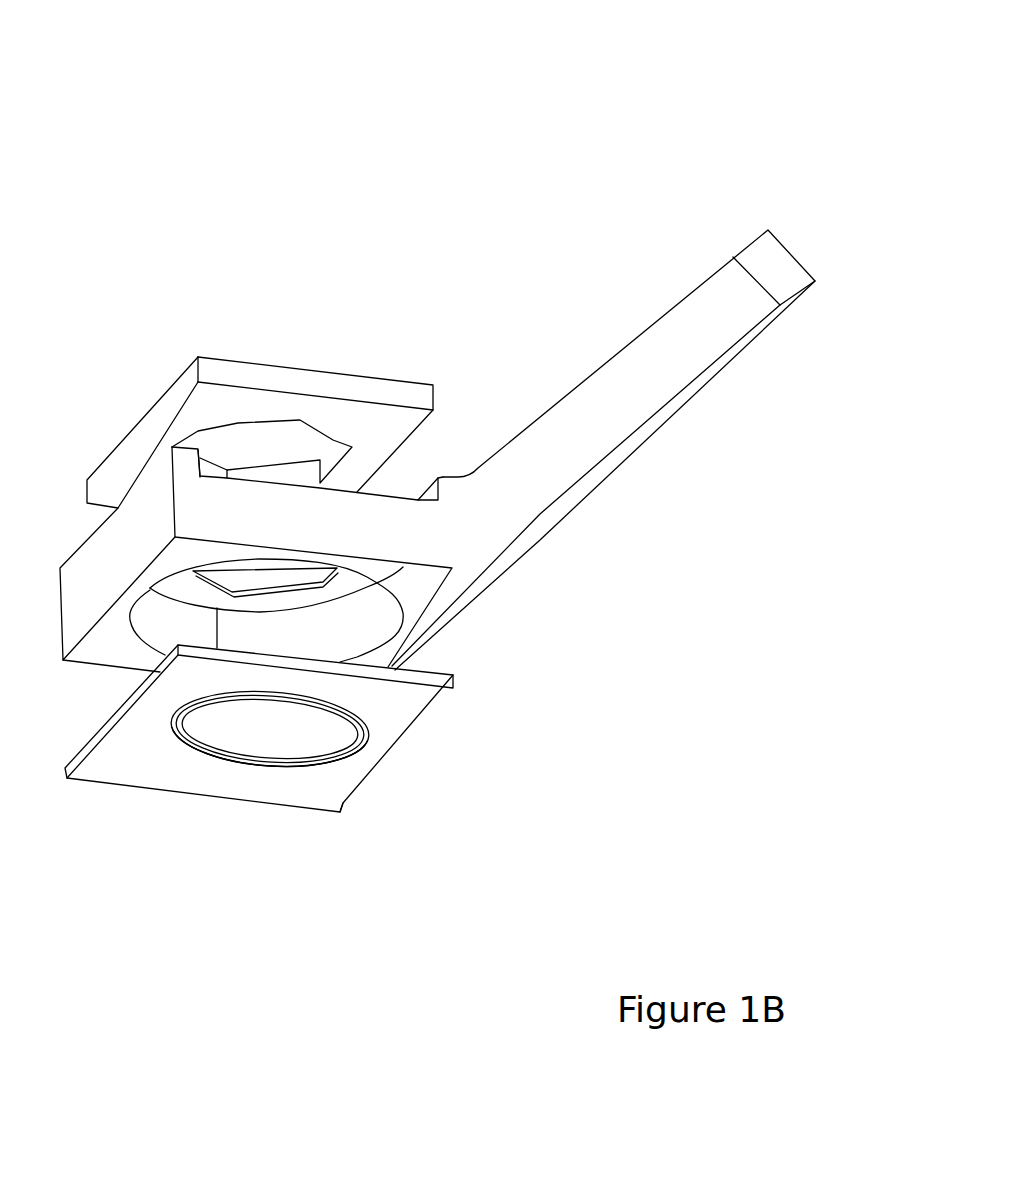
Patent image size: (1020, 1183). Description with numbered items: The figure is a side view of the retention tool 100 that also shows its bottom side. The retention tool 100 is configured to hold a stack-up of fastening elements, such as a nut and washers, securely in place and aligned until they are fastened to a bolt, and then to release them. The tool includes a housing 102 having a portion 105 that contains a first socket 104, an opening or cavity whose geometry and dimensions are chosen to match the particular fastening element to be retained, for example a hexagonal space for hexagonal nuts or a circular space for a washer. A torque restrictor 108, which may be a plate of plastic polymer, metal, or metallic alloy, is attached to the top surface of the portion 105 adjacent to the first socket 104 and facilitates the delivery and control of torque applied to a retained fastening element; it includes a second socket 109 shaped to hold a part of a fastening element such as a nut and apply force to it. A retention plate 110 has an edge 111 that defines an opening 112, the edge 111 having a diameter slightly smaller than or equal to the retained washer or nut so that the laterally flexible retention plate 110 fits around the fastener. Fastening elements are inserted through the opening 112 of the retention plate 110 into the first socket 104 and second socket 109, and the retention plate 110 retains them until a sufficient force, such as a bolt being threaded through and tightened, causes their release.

The retention tool 100 is at (626, 90).
The housing 102 is at (462, 440).
The first socket 104 is at (318, 640).
The portion 105 is at (330, 535).
The torque restrictor 108 is at (177, 432).
The second socket 109 is at (330, 462).
The retention plate 110 is at (392, 727).
The edge 111 is at (273, 772).
The opening 112 is at (227, 740).